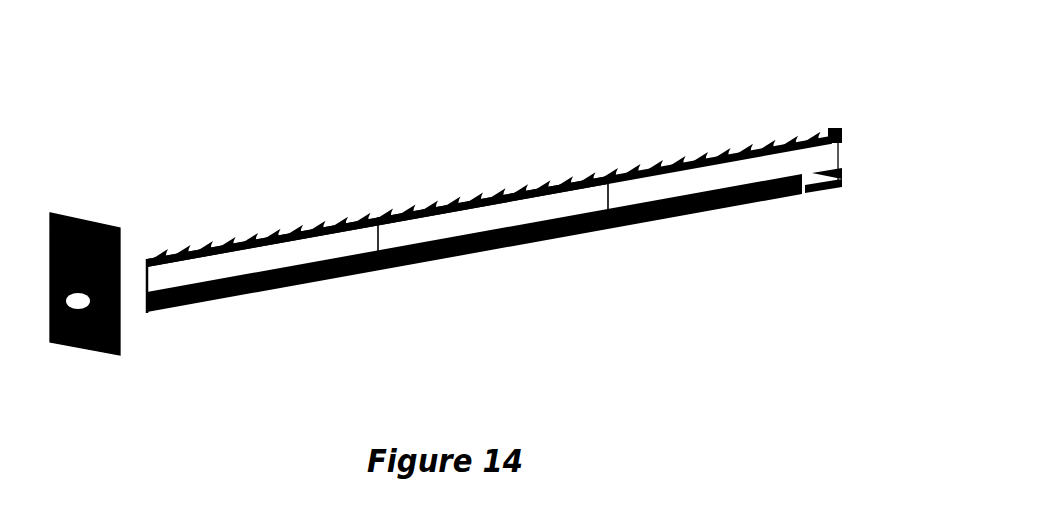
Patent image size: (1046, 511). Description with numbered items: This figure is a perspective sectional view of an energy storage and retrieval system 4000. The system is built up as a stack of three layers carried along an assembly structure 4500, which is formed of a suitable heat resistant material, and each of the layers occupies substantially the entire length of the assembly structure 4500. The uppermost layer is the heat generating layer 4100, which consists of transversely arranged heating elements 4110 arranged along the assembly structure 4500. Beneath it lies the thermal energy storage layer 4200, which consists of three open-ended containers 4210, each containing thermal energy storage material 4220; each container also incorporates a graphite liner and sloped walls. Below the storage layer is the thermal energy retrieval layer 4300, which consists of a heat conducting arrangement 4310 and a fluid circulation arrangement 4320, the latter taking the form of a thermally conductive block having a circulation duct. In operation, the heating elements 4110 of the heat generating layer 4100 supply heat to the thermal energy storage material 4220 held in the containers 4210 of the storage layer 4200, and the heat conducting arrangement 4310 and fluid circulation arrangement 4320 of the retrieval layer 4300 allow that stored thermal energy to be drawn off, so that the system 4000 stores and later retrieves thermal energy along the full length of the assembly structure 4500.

The system 4000 is at (473, 214).
The heat generating layer 4100 is at (494, 188).
The heating elements 4110 is at (315, 225).
The open-ended containers 4210 is at (378, 217).
The thermal energy storage material 4220 is at (467, 222).
The thermal energy storage layer 4200 is at (540, 211).
The thermal energy retrieval layer 4300 is at (206, 305).
The heat conducting arrangement 4310 is at (802, 177).
The fluid circulation arrangement 4320 is at (822, 175).
The assembly structure 4500 is at (200, 200).